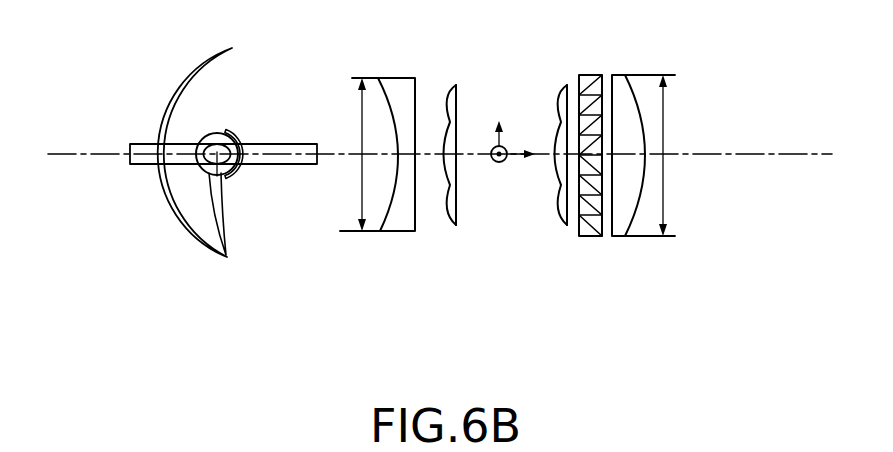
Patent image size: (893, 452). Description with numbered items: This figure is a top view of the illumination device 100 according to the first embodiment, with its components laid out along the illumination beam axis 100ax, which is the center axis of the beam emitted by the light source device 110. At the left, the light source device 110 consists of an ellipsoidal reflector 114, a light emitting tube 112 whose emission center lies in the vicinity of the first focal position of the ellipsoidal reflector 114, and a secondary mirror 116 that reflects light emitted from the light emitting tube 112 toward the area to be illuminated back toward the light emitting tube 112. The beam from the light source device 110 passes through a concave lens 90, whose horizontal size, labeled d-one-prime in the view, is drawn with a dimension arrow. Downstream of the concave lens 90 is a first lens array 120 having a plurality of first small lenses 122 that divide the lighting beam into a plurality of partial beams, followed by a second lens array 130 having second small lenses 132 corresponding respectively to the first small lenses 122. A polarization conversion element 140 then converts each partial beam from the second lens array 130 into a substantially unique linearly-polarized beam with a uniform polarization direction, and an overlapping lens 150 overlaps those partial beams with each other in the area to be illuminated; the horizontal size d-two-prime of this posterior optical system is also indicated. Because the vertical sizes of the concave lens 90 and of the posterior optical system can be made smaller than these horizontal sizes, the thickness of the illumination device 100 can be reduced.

The illumination device 100 is at (732, 40).
The illumination beam axis 100ax is at (95, 154).
The light source device 110 is at (223, 194).
The light emitting tube 112 is at (221, 258).
The ellipsoidal reflector 114 is at (180, 223).
The secondary mirror 116 is at (240, 176).
The concave lens 90 is at (395, 231).
The first lens array 120 is at (438, 185).
The first small lenses 122 is at (449, 86).
The second lens array 130 is at (542, 185).
The second small lenses 132 is at (556, 88).
The polarization conversion element 140 is at (588, 236).
The overlapping lens 150 is at (617, 236).